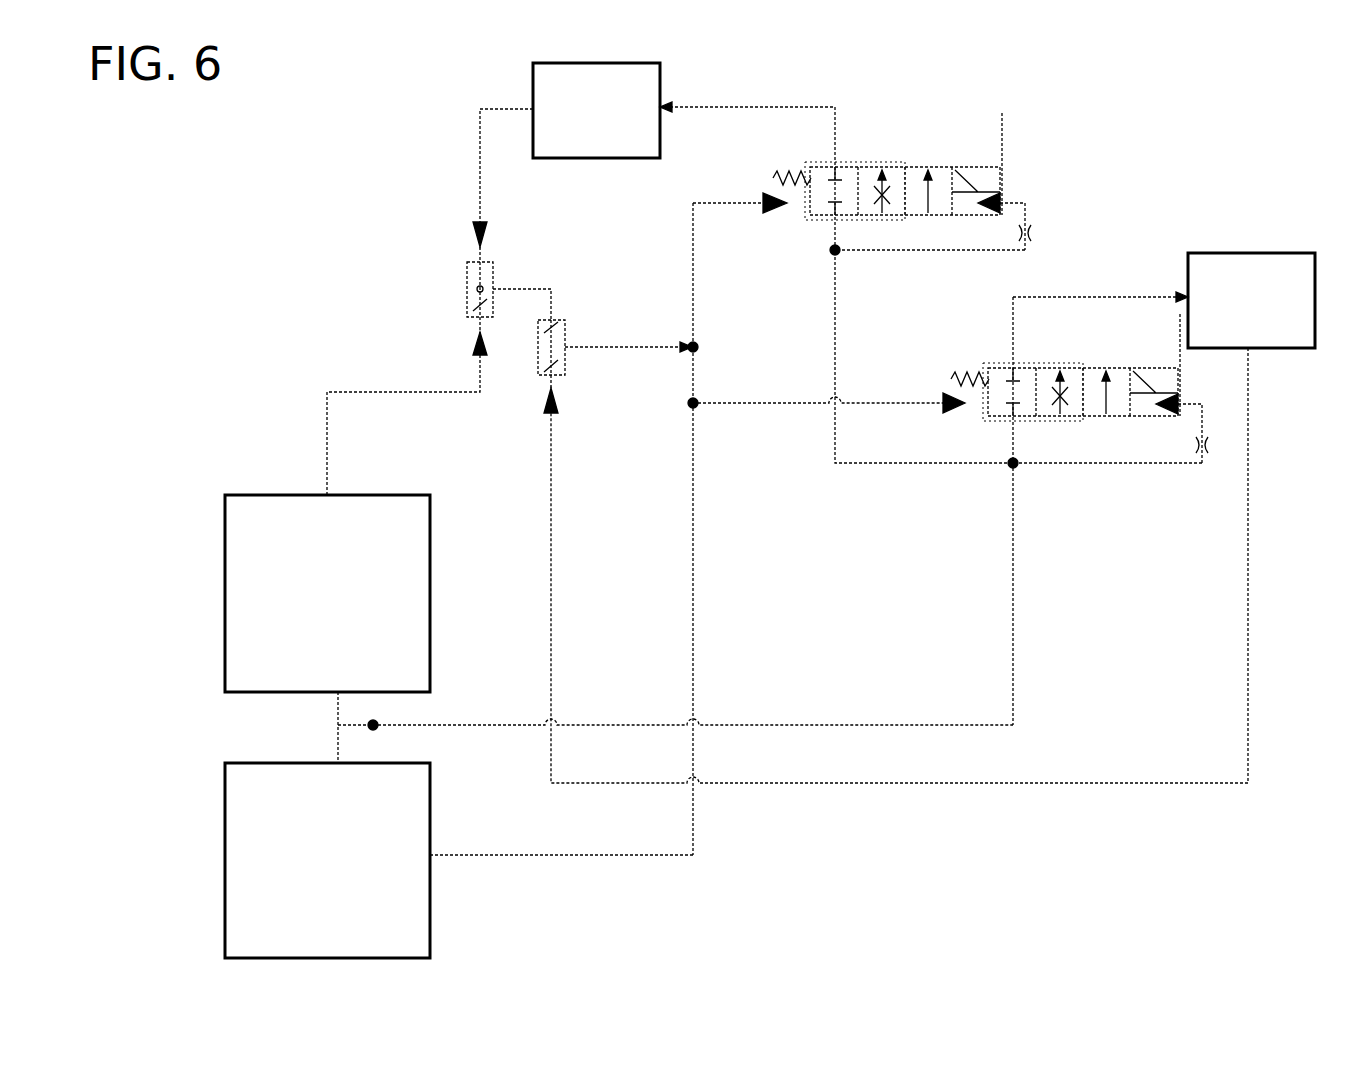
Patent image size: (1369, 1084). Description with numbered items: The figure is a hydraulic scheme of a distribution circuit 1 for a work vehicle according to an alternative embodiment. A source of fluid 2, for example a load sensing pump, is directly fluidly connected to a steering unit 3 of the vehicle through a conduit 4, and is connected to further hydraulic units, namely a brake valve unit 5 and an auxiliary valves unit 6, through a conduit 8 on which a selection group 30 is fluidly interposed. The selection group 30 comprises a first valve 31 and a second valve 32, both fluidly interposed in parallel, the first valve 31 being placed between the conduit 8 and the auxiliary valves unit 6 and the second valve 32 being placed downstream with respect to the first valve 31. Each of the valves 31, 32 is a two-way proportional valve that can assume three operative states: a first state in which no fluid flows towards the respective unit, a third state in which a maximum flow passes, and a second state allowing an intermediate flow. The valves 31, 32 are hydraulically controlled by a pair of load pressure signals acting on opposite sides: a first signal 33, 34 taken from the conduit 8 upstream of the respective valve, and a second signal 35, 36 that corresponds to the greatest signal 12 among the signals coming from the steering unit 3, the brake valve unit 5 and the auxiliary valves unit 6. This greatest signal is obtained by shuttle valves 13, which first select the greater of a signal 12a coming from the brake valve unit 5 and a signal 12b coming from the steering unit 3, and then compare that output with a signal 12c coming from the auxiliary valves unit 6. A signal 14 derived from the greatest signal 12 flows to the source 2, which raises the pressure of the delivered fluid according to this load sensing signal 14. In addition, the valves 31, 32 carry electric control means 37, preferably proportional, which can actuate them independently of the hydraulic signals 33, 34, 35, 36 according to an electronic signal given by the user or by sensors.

The distribution circuit 1 is at (1145, 137).
The source of fluid 2 is at (232, 882).
The steering unit 3 is at (232, 508).
The conduit 4 is at (338, 737).
The brake valve unit 5 is at (545, 82).
The auxiliary valves unit 6 is at (1272, 258).
The conduit 8 is at (1013, 607).
The greatest signal 12 is at (610, 345).
The signal 12a is at (480, 118).
The signal 12b is at (390, 390).
The signal 12c is at (1120, 783).
The shuttle valves 13 is at (495, 270).
The load sensing signal 14 is at (693, 570).
The selection group 30 is at (878, 472).
The first valve 31 is at (1104, 278).
The second valve 32 is at (948, 140).
The first signal 33 is at (1097, 470).
The first signal 34 is at (935, 252).
The second signal 35 is at (768, 402).
The second signal 36 is at (727, 157).
The electric control means 37 is at (1002, 178).